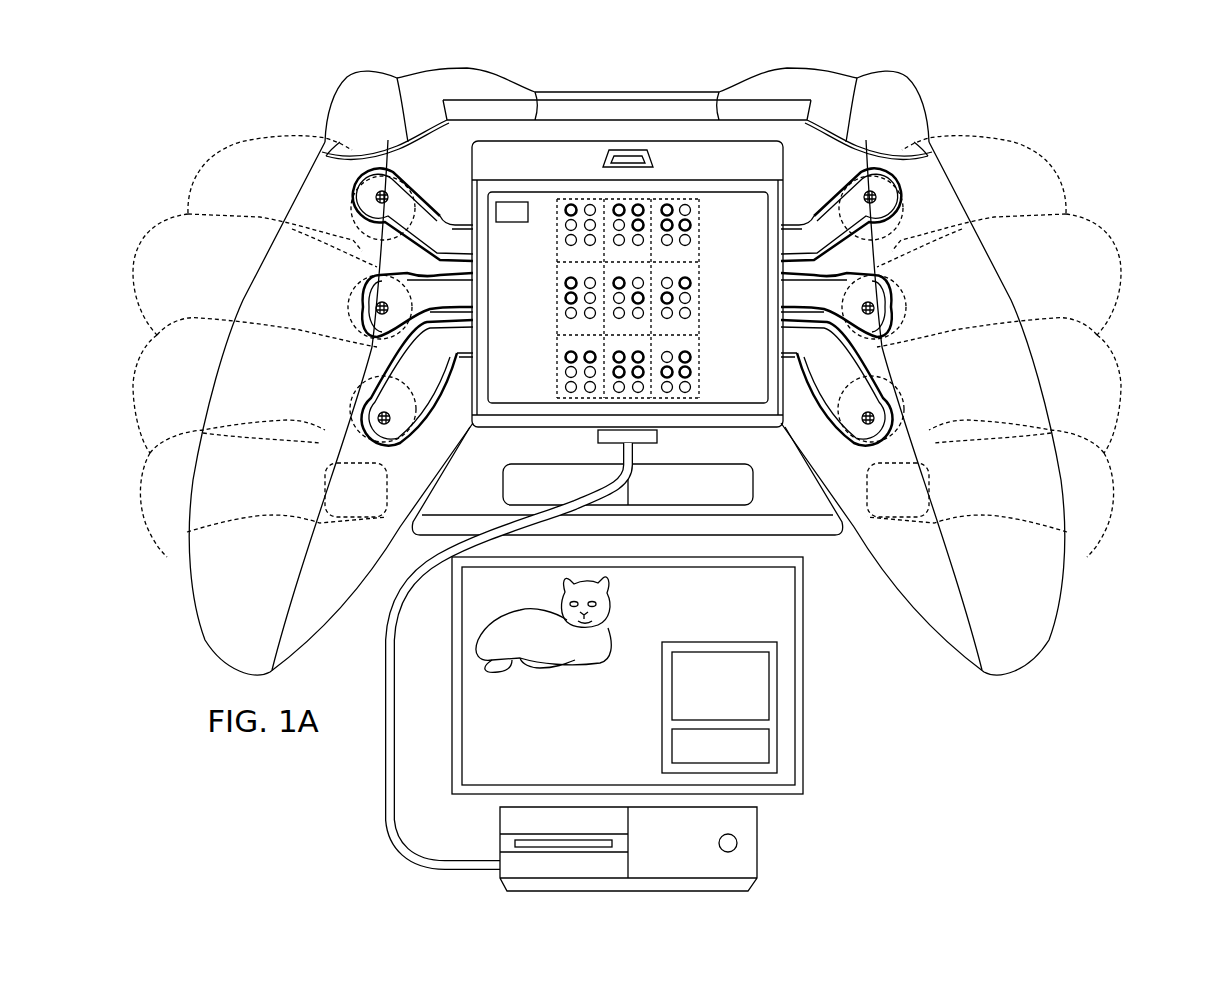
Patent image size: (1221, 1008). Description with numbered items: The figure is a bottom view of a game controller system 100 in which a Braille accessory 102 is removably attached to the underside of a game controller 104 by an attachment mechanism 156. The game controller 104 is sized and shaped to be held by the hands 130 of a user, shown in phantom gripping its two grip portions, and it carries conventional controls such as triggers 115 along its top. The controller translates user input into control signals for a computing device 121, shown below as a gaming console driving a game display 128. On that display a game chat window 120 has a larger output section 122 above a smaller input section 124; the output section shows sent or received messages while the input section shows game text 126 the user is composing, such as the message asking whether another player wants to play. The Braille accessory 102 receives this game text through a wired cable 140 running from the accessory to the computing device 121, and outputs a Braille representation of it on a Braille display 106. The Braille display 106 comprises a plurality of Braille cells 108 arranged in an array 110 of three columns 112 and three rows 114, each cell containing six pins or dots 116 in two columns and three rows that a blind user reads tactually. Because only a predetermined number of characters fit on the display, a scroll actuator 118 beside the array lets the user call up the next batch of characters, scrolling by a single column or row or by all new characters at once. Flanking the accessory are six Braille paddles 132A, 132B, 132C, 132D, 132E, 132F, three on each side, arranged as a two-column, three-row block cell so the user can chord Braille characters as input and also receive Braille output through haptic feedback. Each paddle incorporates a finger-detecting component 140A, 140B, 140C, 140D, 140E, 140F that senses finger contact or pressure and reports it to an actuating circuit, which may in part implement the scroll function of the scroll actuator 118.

The game controller system 100 is at (226, 121).
The Braille accessory 102 is at (582, 138).
The game controller 104 is at (1012, 291).
The Braille display 106 is at (507, 340).
The Braille cells 108 is at (700, 229).
The array 110 is at (545, 373).
The columns 112 is at (580, 192).
The rows 114 is at (550, 294).
The triggers 115 is at (368, 80).
The pins or dots 116 is at (688, 204).
The scroll actuator 118 is at (496, 211).
The game chat window 120 is at (720, 641).
The computing device 121 is at (757, 845).
The output section 122 is at (672, 686).
The input section 124 is at (672, 749).
The game text 126 is at (769, 748).
The game display 128 is at (517, 737).
The hands 130 is at (128, 271).
The Braille paddle 132A is at (348, 193).
The Braille paddle 132B is at (357, 308).
The Braille paddle 132C is at (363, 413).
The Braille paddle 132D is at (906, 193).
The Braille paddle 132E is at (897, 308).
The Braille paddle 132F is at (891, 413).
The wired cable 140 is at (658, 437).
The component 140A is at (376, 201).
The component 140B is at (377, 304).
The component 140C is at (389, 423).
The component 140D is at (877, 201).
The component 140E is at (873, 304).
The component 140F is at (863, 423).
The attachment mechanism 156 is at (808, 536).